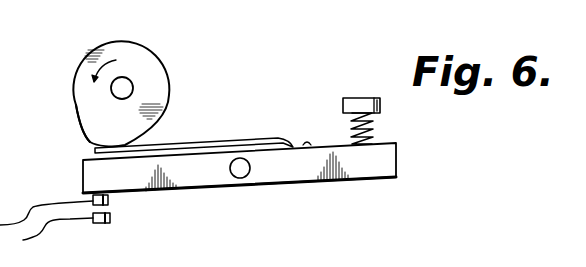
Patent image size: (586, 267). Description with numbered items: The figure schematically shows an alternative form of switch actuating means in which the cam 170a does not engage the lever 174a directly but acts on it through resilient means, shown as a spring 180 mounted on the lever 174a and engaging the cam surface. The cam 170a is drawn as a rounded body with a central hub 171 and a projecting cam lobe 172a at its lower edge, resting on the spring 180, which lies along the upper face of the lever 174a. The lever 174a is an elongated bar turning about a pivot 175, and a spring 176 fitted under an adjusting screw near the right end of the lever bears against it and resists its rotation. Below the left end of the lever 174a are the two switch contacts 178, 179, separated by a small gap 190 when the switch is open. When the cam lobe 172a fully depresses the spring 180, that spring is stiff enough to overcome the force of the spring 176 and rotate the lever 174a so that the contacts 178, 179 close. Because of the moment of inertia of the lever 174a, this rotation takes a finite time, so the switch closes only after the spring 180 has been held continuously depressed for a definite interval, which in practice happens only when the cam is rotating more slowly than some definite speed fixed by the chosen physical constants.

The cam 170a is at (148, 55).
The cam hub / shaft 171 is at (128, 88).
The cam lobe 172a is at (89, 142).
The spring 180 is at (175, 147).
The lever 174a is at (337, 180).
The pivot 175 is at (240, 172).
The spring 176 is at (373, 133).
The switch contact 178 is at (110, 200).
The switch contact 179 is at (98, 226).
The contact gap 190 is at (116, 214).